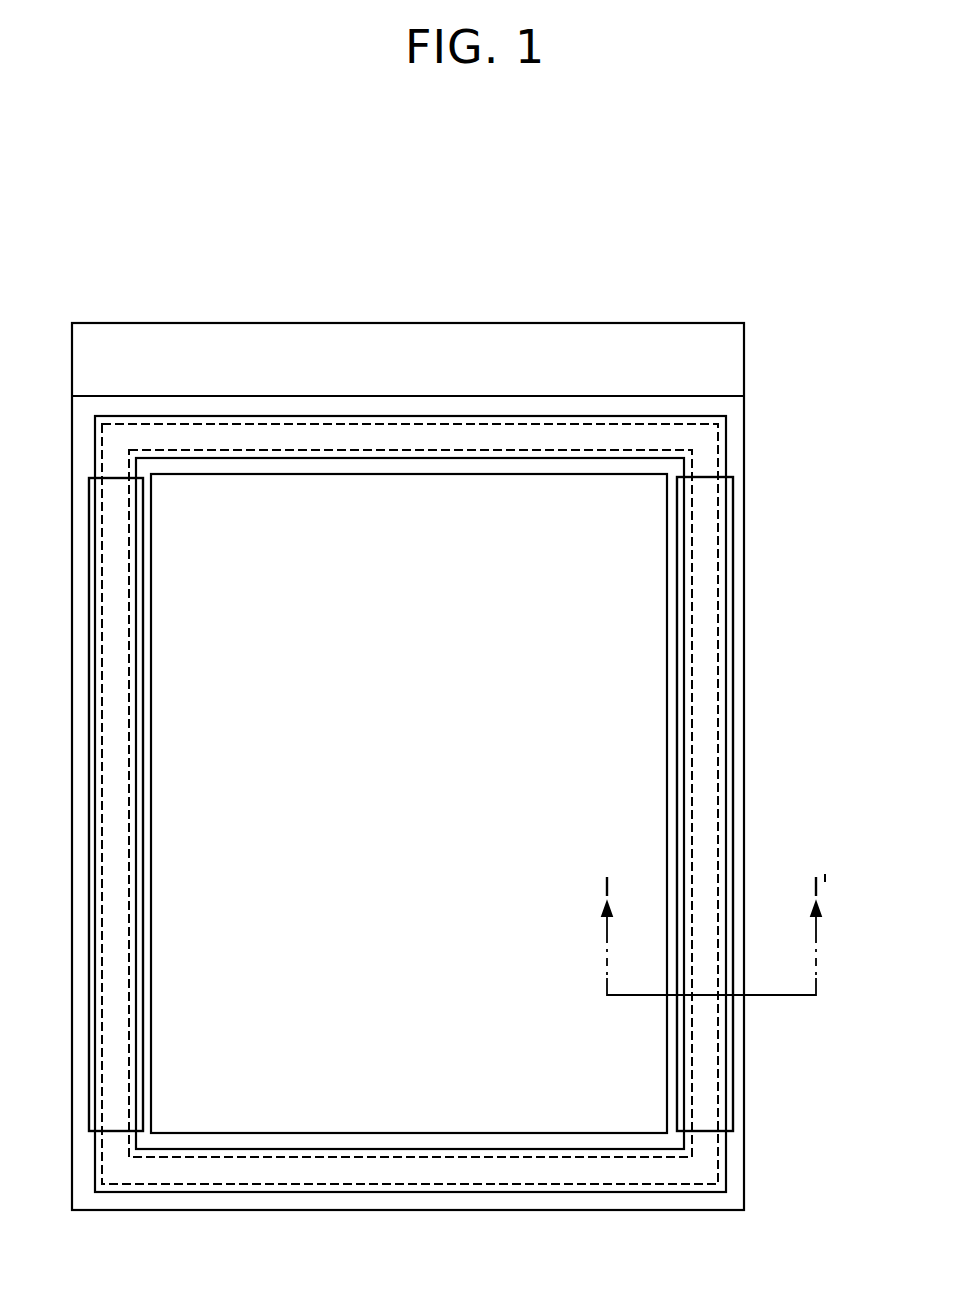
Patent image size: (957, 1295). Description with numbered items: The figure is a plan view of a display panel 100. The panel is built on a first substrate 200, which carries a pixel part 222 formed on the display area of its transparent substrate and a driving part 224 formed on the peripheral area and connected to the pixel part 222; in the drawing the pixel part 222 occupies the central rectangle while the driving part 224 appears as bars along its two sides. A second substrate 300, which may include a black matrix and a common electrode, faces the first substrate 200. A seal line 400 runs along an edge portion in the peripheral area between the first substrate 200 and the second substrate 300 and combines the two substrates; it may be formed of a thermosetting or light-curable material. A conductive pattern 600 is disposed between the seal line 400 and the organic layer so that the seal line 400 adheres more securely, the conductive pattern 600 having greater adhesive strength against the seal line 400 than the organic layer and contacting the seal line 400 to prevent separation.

The display panel 100 is at (520, 274).
The first substrate 200 is at (744, 350).
The second substrate 300 is at (712, 396).
The conductive pattern 600 is at (727, 670).
The seal line 400 is at (718, 740).
The pixel part 222 is at (667, 589).
The driving part 224 is at (733, 505).